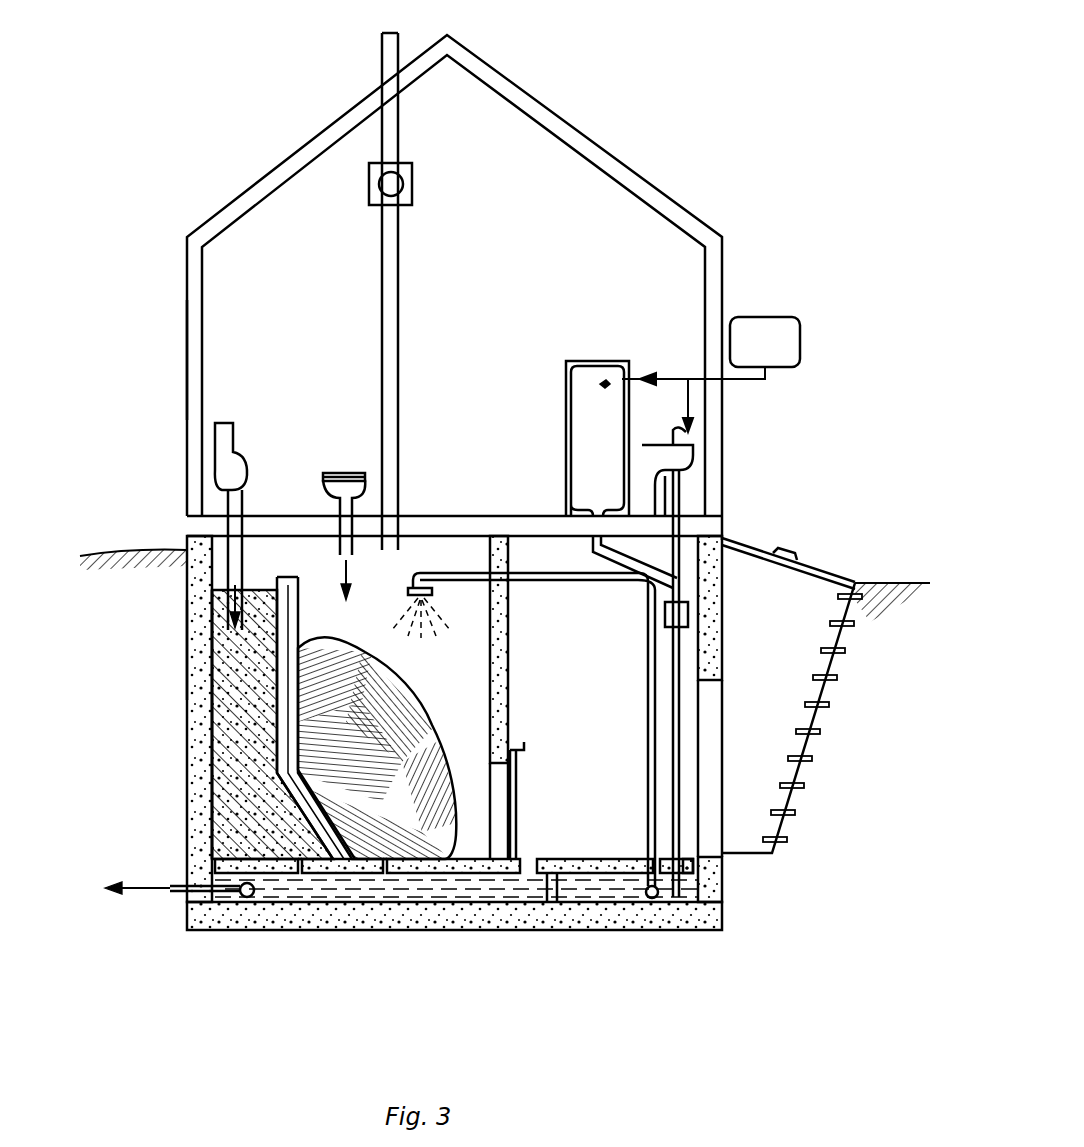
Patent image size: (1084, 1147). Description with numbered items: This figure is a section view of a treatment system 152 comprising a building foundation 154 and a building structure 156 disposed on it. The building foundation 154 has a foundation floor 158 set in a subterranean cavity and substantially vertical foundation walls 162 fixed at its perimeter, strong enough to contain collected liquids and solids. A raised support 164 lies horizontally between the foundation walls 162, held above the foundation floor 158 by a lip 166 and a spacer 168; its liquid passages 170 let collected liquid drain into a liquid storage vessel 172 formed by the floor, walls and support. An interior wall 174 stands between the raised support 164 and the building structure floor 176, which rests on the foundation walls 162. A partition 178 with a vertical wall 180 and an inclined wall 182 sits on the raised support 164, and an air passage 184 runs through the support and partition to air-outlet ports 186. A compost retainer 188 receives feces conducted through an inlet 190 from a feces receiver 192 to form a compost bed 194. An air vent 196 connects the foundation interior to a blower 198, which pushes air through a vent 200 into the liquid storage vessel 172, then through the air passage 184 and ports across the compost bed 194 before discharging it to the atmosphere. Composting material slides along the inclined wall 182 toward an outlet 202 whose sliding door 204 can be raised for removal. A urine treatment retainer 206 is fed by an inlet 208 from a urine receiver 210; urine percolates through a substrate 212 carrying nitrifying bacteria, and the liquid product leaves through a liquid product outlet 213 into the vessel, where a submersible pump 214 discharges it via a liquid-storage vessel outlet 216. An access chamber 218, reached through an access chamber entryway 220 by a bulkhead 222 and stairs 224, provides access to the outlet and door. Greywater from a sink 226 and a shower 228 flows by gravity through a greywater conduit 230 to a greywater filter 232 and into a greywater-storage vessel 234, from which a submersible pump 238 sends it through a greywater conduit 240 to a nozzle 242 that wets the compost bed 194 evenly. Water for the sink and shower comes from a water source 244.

The treatment system 152 is at (724, 185).
The building foundation 154 is at (178, 643).
The building structure 156 is at (178, 374).
The foundation floor 158 is at (390, 935).
The foundation walls 162 is at (722, 600).
The raised support 164 is at (588, 880).
The lip 166 is at (205, 870).
The spacer 168 is at (558, 898).
The liquid passages 170 is at (440, 865).
The liquid storage vessel 172 is at (282, 882).
The interior wall 174 is at (510, 618).
The building structure floor 176 is at (196, 526).
The partition 178 is at (258, 673).
The vertical wall 180 is at (272, 706).
The inclined wall 182 is at (260, 815).
The air passage 184 is at (345, 875).
The air-outlet ports 186 is at (300, 630).
The compost retainer 188 is at (462, 673).
The inlet 190 is at (342, 520).
The feces receiver 192 is at (325, 492).
The compost bed 194 is at (396, 722).
The air vent 196 is at (399, 322).
The blower 198 is at (412, 184).
The vent 200 is at (527, 905).
The outlet 202 is at (505, 790).
The sliding door 204 is at (526, 746).
The urine treatment retainer 206 is at (270, 782).
The inlet 208 is at (244, 568).
The urine receiver 210 is at (230, 458).
The substrate 212 is at (215, 632).
The liquid product outlet 213 is at (300, 878).
The submersible pump 214 is at (242, 900).
The liquid-storage vessel outlet 216 is at (182, 896).
The access chamber 218 is at (602, 673).
The access chamber entryway 220 is at (710, 745).
The bulkhead 222 is at (808, 568).
The stairs 224 is at (812, 716).
The sink 226 is at (696, 462).
The shower 228 is at (597, 360).
The greywater conduit 230 is at (672, 692).
The greywater filter 232 is at (688, 618).
The greywater-storage vessel 234 is at (598, 875).
The submersible pump 238 is at (653, 900).
The greywater conduit 240 is at (648, 760).
The nozzle 242 is at (412, 583).
The water source 244 is at (800, 351).